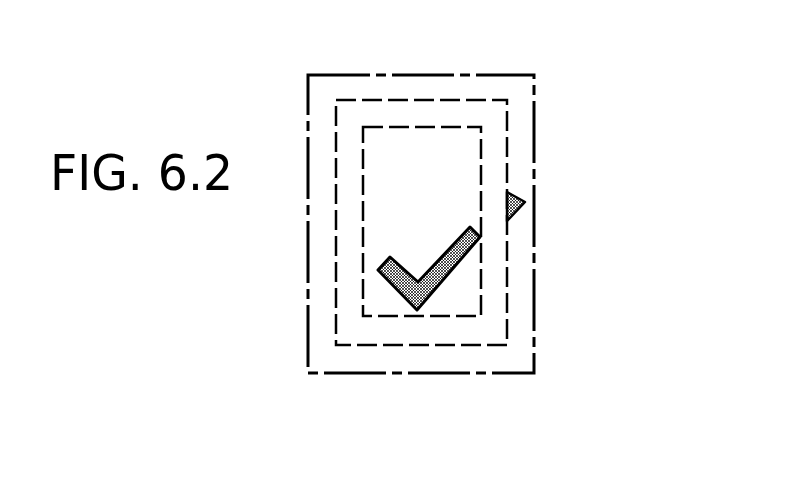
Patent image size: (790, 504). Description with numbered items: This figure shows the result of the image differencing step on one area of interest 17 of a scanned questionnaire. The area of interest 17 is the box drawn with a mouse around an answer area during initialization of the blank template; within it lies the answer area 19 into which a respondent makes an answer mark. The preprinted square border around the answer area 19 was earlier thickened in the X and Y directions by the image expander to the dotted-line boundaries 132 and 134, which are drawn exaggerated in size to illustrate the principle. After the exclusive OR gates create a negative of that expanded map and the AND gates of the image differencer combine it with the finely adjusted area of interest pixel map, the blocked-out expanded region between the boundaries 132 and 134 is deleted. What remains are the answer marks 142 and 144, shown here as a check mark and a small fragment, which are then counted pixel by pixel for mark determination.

The area of interest 17 is at (307, 310).
The answer area 19 is at (426, 241).
The expanded border line 132 is at (372, 373).
The expanded border line 134 is at (447, 313).
The answer mark 142 is at (455, 277).
The answer mark 144 is at (518, 208).